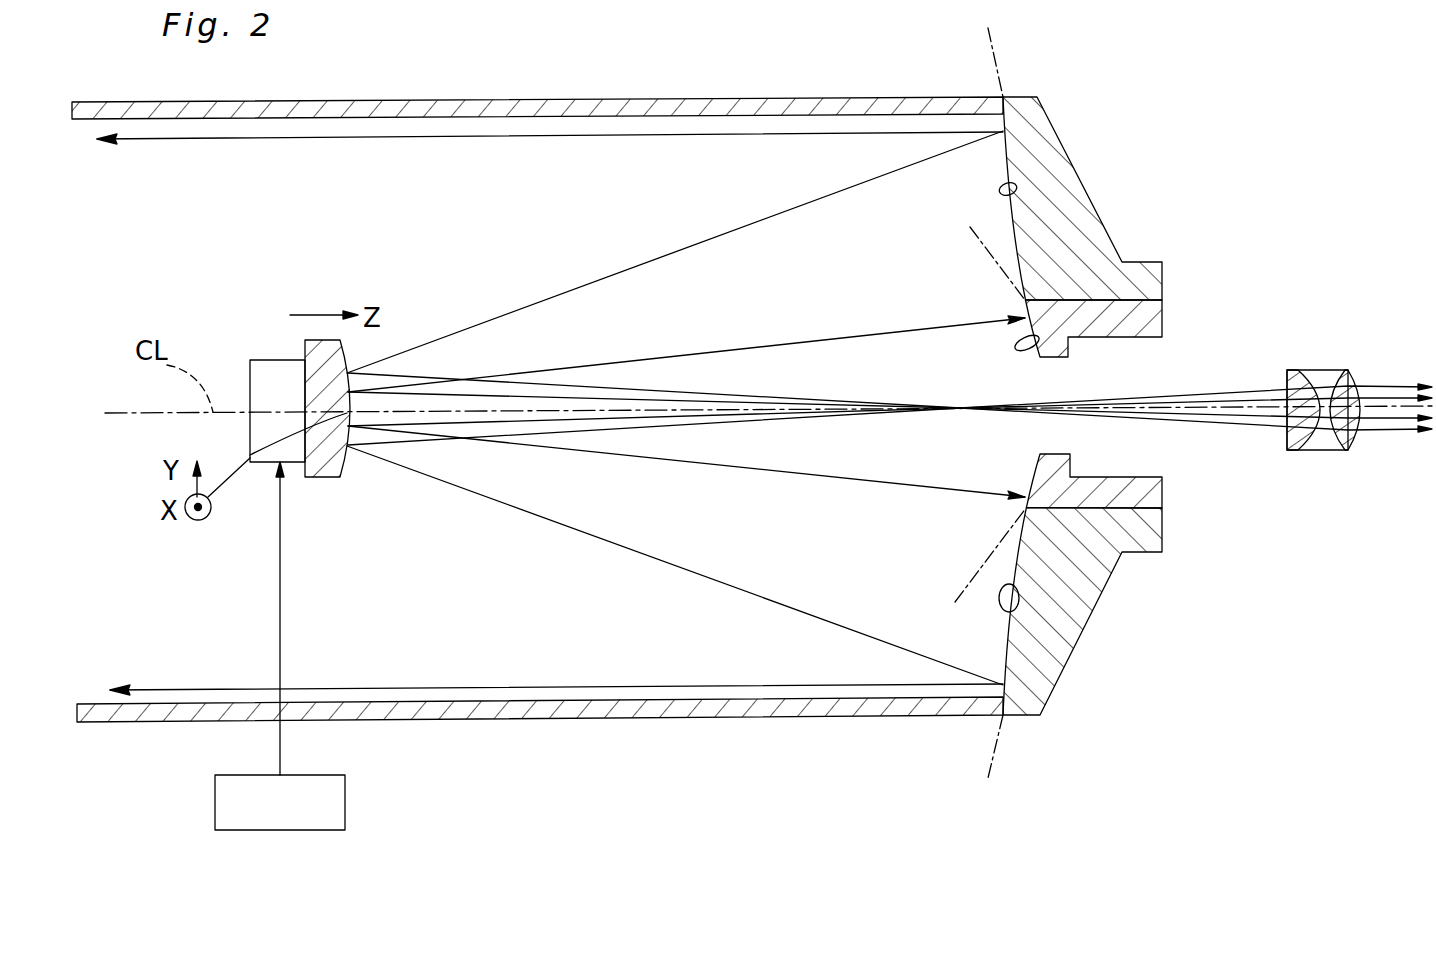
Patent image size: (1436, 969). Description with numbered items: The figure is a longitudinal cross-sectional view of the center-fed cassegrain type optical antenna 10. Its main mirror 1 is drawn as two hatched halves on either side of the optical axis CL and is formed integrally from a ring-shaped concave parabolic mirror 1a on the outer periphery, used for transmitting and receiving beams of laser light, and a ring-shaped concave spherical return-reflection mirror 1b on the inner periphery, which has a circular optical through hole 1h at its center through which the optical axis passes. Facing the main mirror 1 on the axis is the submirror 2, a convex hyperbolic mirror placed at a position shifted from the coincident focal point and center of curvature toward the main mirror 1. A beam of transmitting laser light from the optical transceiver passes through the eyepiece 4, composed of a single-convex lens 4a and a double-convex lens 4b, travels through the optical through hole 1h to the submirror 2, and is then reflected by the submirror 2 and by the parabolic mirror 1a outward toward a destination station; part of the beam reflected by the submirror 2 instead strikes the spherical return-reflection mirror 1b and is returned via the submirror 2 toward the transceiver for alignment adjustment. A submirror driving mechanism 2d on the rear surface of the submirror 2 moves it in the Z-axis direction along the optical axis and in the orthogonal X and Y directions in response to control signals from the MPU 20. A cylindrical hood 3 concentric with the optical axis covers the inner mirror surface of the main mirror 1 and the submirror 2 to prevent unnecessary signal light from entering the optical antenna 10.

The main mirror 1 is at (1171, 403).
The parabolic mirror 1a is at (1017, 193).
The spherical return-reflection mirror 1b is at (1087, 298).
The optical through hole 1h is at (1058, 357).
The submirror 2 is at (347, 460).
The submirror driving mechanism 2d is at (260, 360).
The hood 3 is at (565, 100).
The eyepiece 4 is at (1320, 358).
The single-convex lens 4a is at (1297, 372).
The double-convex lens 4b is at (1346, 372).
The optical antenna 10 is at (734, 48).
The MPU 20 is at (348, 806).